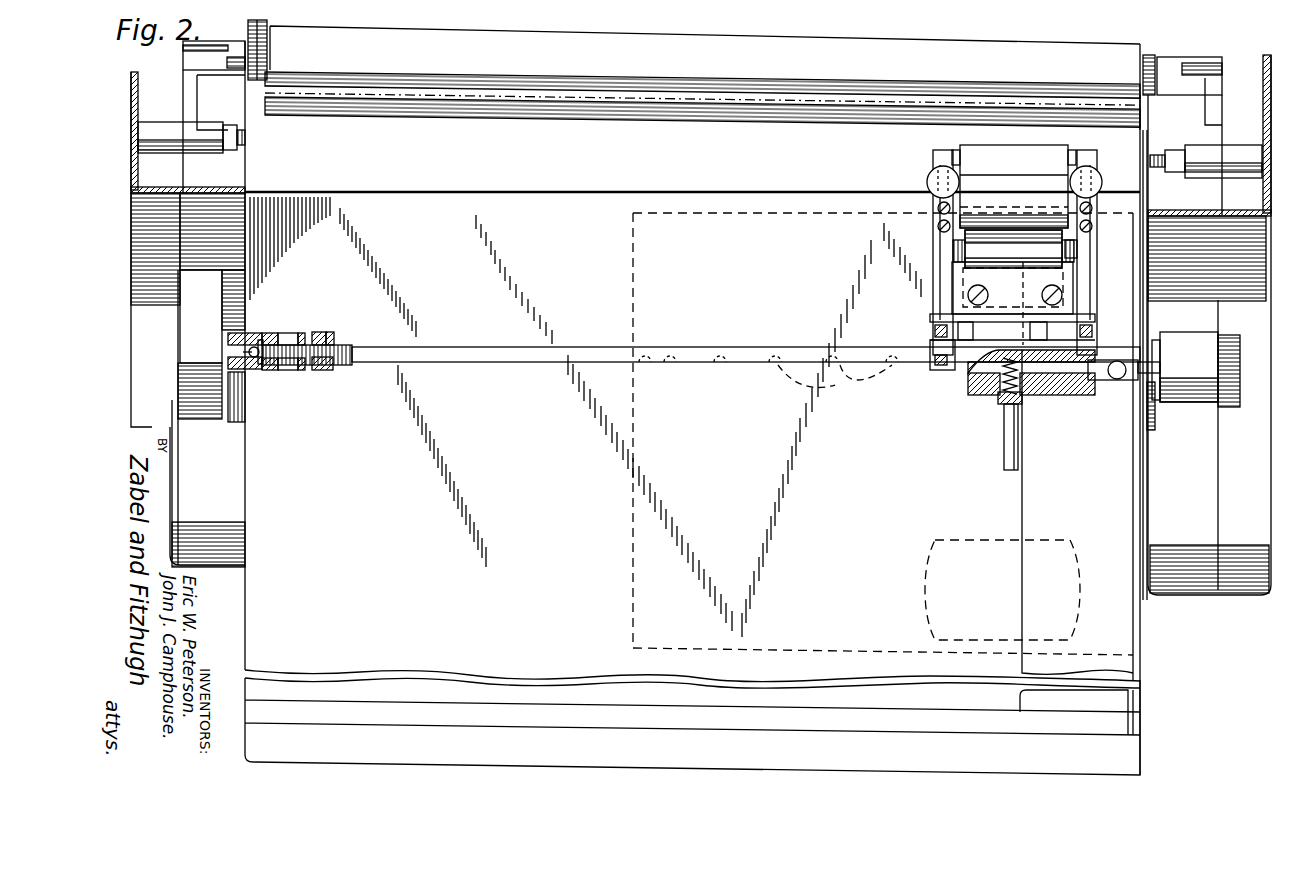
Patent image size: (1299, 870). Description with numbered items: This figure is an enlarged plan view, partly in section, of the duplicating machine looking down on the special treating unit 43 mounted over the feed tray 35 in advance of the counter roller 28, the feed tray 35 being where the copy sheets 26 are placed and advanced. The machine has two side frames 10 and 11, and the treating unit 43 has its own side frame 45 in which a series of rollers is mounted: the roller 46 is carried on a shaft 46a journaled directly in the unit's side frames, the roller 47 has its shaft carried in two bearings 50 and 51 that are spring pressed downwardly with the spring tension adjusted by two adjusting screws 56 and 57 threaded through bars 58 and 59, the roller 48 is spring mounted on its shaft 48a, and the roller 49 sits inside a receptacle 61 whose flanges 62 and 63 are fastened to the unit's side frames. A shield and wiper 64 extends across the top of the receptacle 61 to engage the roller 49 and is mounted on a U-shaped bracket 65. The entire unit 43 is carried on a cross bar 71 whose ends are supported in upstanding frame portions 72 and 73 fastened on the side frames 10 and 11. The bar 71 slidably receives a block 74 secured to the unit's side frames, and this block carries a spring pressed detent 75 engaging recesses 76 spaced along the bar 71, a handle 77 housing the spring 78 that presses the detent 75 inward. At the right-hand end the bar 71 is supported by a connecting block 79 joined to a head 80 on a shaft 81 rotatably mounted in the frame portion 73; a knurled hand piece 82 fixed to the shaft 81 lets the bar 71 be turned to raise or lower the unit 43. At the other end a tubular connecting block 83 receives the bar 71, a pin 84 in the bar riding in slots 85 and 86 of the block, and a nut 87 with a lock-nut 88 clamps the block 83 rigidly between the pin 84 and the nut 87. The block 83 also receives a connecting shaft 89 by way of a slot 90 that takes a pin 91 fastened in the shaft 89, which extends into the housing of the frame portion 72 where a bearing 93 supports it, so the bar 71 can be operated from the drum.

The side frame 10 is at (152, 427).
The side frame 11 is at (1234, 577).
The copy sheet 26 is at (625, 418).
The counter roller 28 is at (1132, 51).
The feed tray 35 is at (887, 767).
The special treating unit 43 is at (1005, 295).
The side frame 45 is at (1080, 247).
The roller 46 is at (1026, 152).
The shaft 46a is at (955, 152).
The roller 47 is at (1005, 186).
The roller 48 is at (1026, 248).
The shaft 48a is at (955, 246).
The roller 49 is at (1012, 288).
The bearing 50 is at (1093, 206).
The bearing 51 is at (938, 205).
The adjusting screw 56 is at (1100, 181).
The adjusting screw 57 is at (930, 176).
The bar 58 is at (1093, 227).
The bar 59 is at (938, 227).
The receptacle 61 is at (1012, 327).
The flange 62 is at (933, 322).
The flange 63 is at (1087, 325).
The shield and wiper 64 is at (1038, 303).
The U-shaped bracket 65 is at (968, 329).
The cross bar 71 is at (540, 353).
The upstanding frame portion 72 is at (180, 386).
The upstanding frame portion 73 is at (1157, 430).
The block 74 is at (1052, 394).
The spring pressed detent 75 is at (980, 396).
The recesses 76 is at (822, 383).
The handle 77 is at (1004, 436).
The spring 78 is at (1024, 396).
The connecting block 79 is at (1115, 380).
The head 80 is at (1115, 360).
The shaft 81 is at (1150, 370).
The knurled hand piece 82 is at (1193, 398).
The connecting block 83 is at (272, 333).
The pin 84 is at (303, 333).
The slot 85 is at (295, 370).
The slot 86 is at (306, 345).
The nut 87 is at (324, 333).
The lock-nut 88 is at (336, 338).
The connecting shaft 89 is at (246, 378).
The slot 90 is at (246, 333).
The pin 91 is at (265, 340).
The bearing 93 is at (250, 370).